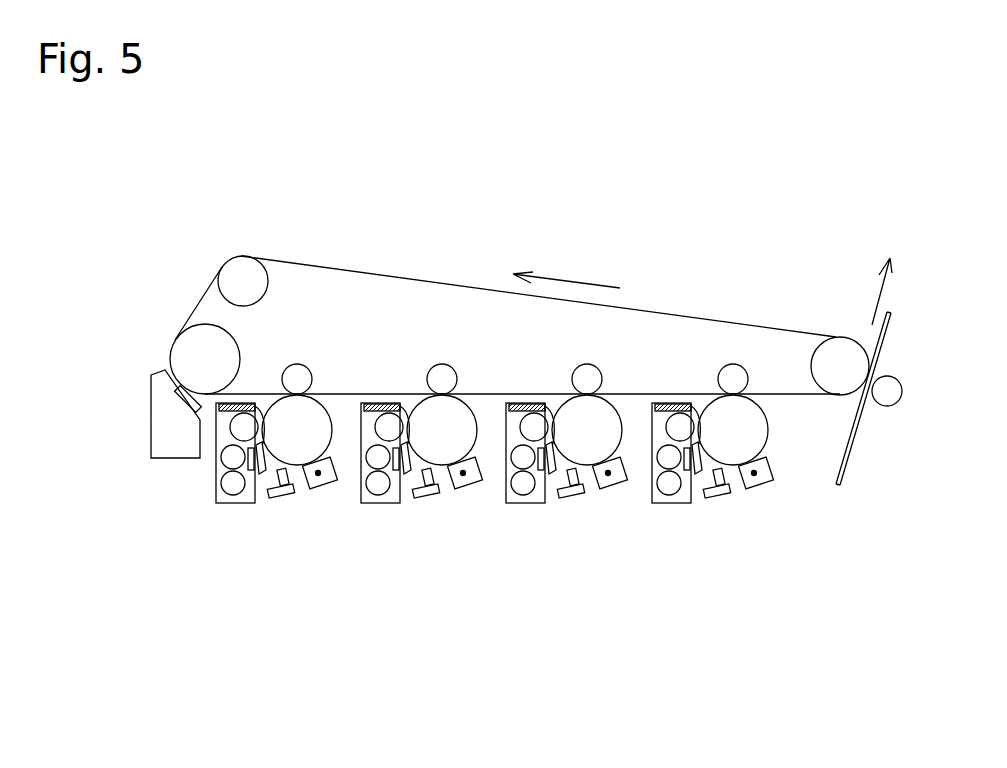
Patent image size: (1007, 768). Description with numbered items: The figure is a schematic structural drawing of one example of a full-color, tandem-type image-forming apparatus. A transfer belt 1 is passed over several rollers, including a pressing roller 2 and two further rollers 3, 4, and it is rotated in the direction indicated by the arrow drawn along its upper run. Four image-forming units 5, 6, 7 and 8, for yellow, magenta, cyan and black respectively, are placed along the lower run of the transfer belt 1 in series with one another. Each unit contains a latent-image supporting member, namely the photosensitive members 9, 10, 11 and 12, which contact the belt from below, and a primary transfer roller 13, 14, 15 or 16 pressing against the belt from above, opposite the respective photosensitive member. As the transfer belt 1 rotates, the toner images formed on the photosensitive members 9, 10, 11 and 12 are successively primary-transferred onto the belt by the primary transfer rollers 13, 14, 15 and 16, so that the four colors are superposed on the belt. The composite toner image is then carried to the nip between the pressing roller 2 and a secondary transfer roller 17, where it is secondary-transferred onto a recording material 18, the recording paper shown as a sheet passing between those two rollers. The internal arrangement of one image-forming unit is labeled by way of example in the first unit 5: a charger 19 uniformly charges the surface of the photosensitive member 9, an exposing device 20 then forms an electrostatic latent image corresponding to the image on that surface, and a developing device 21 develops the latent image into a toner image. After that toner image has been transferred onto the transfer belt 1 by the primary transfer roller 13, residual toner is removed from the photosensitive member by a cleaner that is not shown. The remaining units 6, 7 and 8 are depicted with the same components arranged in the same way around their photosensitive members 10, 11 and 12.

The transfer belt 1 is at (441, 280).
The pressing roller 2 is at (836, 357).
The roller 3 is at (241, 275).
The roller 4 is at (187, 352).
The image-forming unit 5 is at (259, 486).
The image-forming unit 6 is at (423, 487).
The image-forming unit 7 is at (568, 487).
The image-forming unit 8 is at (716, 493).
The latent-image supporting member 9 is at (300, 452).
The latent-image supporting member 10 is at (445, 452).
The latent-image supporting member 11 is at (590, 452).
The latent-image supporting member 12 is at (737, 452).
The primary transfer roller 13 is at (297, 373).
The primary transfer roller 14 is at (444, 373).
The primary transfer roller 15 is at (589, 373).
The primary transfer roller 16 is at (732, 376).
The secondary transfer roller 17 is at (890, 396).
The recording material 18 is at (888, 330).
The charger 19 is at (322, 483).
The exposing device 20 is at (268, 512).
The developing device 21 is at (222, 440).